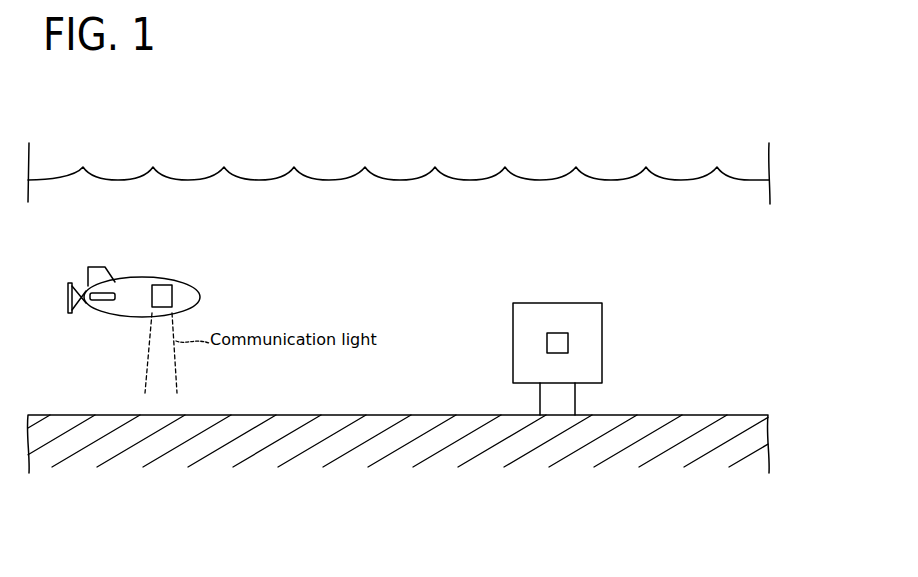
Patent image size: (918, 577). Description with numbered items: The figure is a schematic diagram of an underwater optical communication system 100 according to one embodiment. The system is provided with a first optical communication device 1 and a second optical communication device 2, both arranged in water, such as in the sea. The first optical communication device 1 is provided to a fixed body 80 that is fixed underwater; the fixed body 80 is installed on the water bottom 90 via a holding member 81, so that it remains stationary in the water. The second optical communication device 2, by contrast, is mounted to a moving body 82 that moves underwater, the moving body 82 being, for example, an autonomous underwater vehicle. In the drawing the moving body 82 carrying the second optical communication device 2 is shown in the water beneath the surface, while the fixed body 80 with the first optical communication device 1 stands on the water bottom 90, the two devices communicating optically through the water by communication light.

The water surface 100 is at (212, 138).
The underwater vehicle (submarine) 82 is at (197, 284).
The communication device on underwater vehicle 2 is at (164, 285).
The optical communication device 1 is at (568, 341).
The housing 80 is at (602, 348).
The pedestal 81 is at (540, 395).
The seabed (ground) 90 is at (663, 415).